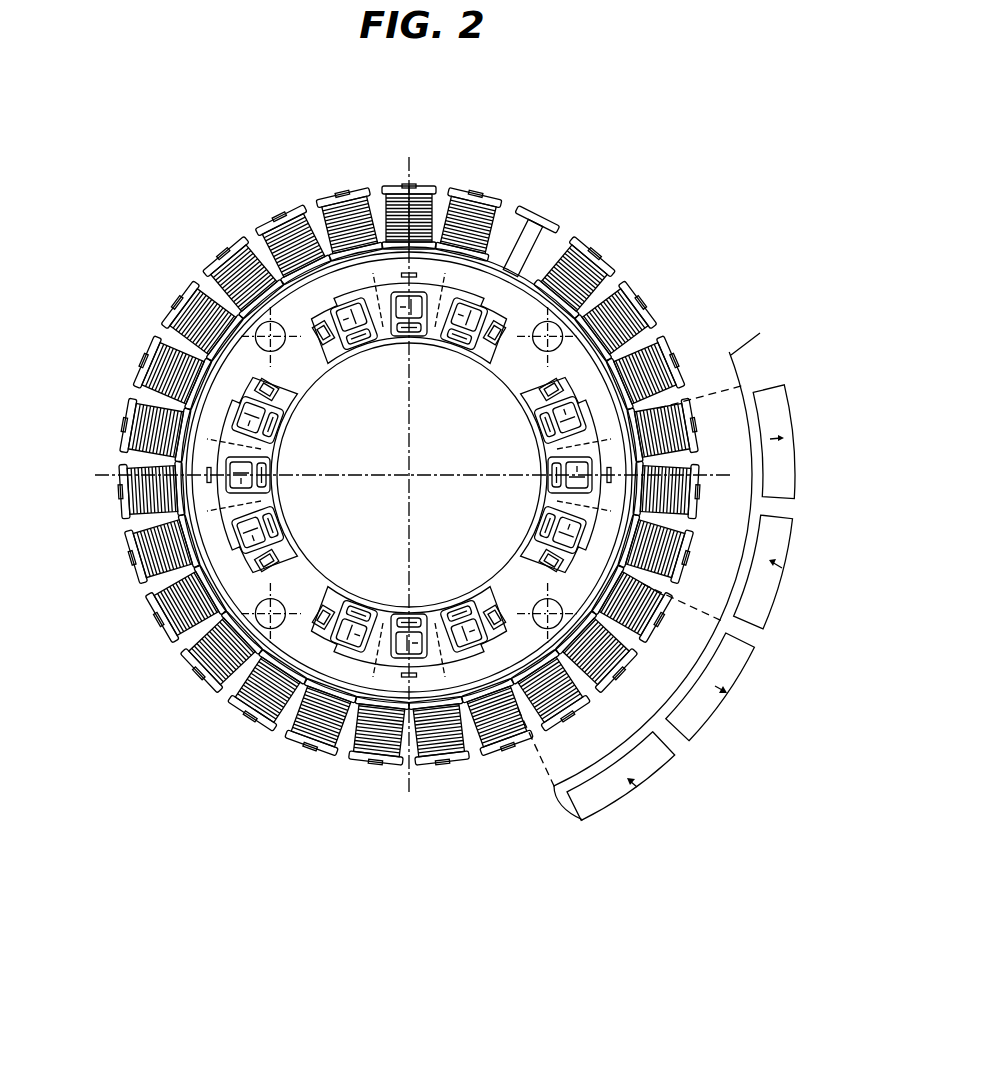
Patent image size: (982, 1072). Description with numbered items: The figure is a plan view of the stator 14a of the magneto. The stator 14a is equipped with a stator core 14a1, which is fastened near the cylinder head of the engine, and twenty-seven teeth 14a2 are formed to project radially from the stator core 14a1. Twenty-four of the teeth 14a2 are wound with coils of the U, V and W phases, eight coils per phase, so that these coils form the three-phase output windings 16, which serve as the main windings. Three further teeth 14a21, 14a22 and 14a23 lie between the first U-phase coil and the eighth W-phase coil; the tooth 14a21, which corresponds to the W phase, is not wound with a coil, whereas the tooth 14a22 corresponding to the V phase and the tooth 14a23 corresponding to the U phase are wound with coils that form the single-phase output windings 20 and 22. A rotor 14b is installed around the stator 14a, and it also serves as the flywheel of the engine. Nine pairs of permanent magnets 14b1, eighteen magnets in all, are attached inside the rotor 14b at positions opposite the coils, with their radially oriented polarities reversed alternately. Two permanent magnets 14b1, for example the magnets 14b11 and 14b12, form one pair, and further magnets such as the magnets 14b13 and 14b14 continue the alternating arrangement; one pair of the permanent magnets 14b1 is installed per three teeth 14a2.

The stator 14a is at (415, 442).
The stator core 14a1 is at (302, 367).
The teeth 14a2 is at (294, 226).
The three-phase output windings 16 is at (206, 285).
The tooth 14a21 is at (536, 211).
The tooth 14a22 is at (631, 267).
The single-phase output winding 20 is at (591, 253).
The tooth 14a23 is at (665, 312).
The single-phase output winding 22 is at (628, 291).
The rotor 14b is at (666, 630).
The permanent magnets 14b1 is at (585, 818).
The permanent magnet 14b11 is at (627, 787).
The permanent magnet 14b12 is at (700, 728).
The permanent magnet 14b13 is at (757, 628).
The permanent magnet 14b14 is at (763, 384).